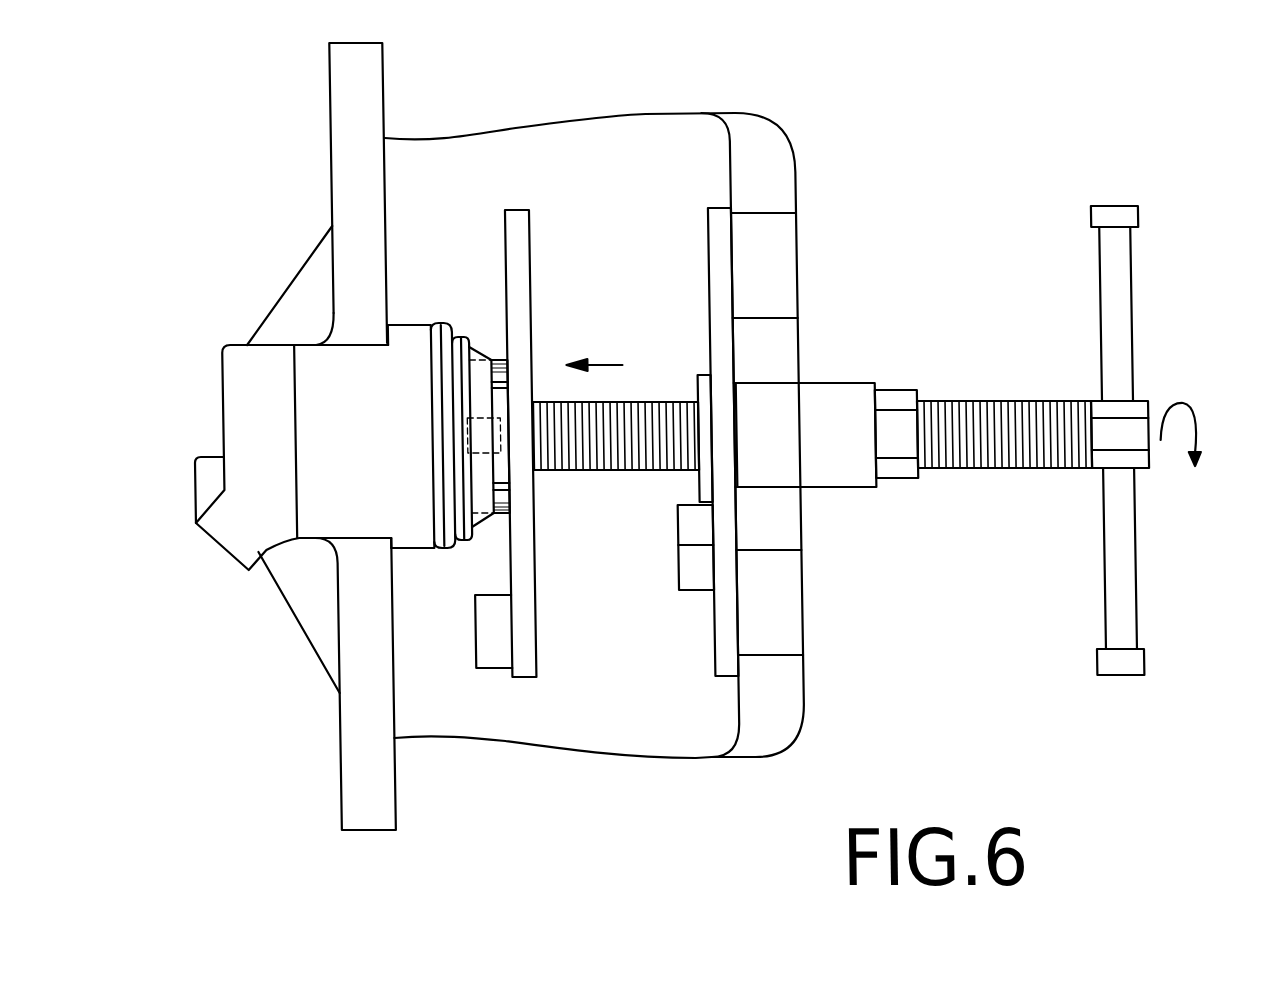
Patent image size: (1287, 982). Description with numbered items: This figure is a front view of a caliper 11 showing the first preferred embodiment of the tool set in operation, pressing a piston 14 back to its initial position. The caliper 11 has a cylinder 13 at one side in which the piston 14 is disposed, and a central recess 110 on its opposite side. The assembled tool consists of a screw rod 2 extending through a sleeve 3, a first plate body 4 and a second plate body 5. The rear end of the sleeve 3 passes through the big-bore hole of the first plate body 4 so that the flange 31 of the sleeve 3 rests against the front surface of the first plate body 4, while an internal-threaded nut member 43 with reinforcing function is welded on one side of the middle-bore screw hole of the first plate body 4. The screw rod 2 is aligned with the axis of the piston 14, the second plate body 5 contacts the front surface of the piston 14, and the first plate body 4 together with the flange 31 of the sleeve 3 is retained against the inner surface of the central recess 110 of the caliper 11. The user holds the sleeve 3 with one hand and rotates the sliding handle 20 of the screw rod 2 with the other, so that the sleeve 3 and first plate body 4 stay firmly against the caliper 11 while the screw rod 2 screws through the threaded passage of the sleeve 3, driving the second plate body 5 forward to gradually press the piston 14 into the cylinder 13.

The screw rod 2 is at (993, 400).
The sleeve 3 is at (842, 382).
The first plate body 4 is at (720, 260).
The second plate body 5 is at (521, 238).
The caliper 11 is at (777, 165).
The cylinder 13 is at (263, 375).
The piston 14 is at (496, 357).
The sliding handle 20 is at (1125, 320).
The flange 31 is at (696, 505).
The internal-threaded nut member 43 is at (694, 590).
The central recess 110 is at (781, 353).